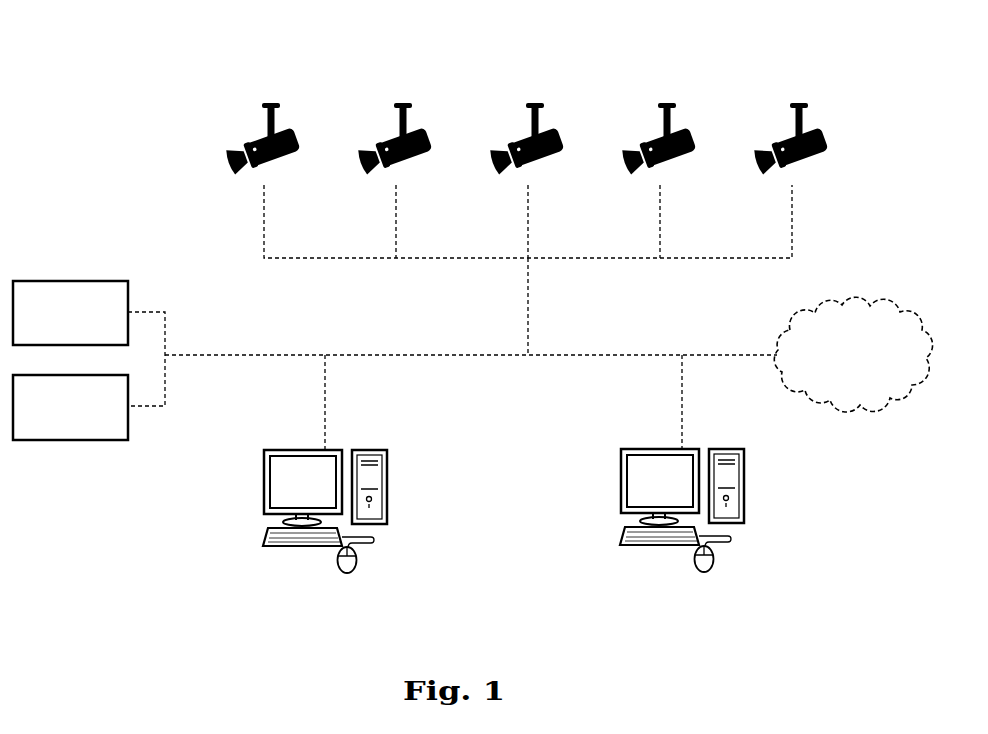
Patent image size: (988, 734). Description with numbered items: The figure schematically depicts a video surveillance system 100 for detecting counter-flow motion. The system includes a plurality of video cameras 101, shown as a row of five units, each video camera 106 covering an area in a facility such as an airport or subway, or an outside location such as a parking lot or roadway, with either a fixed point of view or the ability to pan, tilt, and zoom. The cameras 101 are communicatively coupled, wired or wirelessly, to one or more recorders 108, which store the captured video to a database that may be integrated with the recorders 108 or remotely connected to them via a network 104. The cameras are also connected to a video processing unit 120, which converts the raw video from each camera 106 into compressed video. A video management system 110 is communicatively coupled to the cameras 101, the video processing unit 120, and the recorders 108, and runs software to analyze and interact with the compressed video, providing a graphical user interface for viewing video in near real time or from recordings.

The video surveillance system 100 is at (119, 182).
The plurality of video cameras 101 is at (838, 101).
The network 104 is at (830, 376).
The video camera 106 is at (540, 159).
The recorder 108 is at (53, 337).
The video management system 110 is at (754, 463).
The video processing unit 120 is at (398, 464).